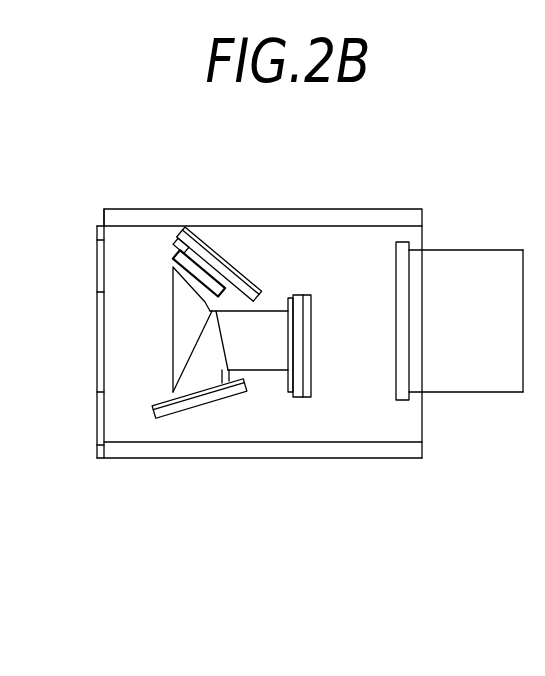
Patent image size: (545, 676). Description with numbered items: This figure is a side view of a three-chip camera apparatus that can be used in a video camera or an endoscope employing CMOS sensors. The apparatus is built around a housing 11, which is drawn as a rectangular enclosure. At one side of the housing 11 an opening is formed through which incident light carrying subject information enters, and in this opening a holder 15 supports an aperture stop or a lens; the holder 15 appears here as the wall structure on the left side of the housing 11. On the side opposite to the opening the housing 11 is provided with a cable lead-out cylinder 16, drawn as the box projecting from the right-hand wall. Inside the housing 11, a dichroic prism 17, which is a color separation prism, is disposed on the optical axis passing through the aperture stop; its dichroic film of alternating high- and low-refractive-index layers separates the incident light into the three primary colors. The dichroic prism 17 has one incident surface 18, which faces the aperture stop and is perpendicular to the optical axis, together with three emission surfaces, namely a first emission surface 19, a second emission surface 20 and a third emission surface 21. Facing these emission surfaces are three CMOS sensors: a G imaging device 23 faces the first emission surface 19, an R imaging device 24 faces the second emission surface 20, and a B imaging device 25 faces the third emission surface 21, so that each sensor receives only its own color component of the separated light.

The housing 11 is at (388, 208).
The holder 15 is at (97, 240).
The cable lead-out cylinder 16 is at (472, 250).
The dichroic prism 17 is at (159, 268).
The incident surface 18 is at (172, 342).
The first emission surface 19 is at (290, 357).
The second emission surface 20 is at (222, 380).
The third emission surface 21 is at (197, 248).
The G imaging device 23 is at (312, 318).
The R imaging device 24 is at (183, 420).
The B imaging device 25 is at (243, 270).